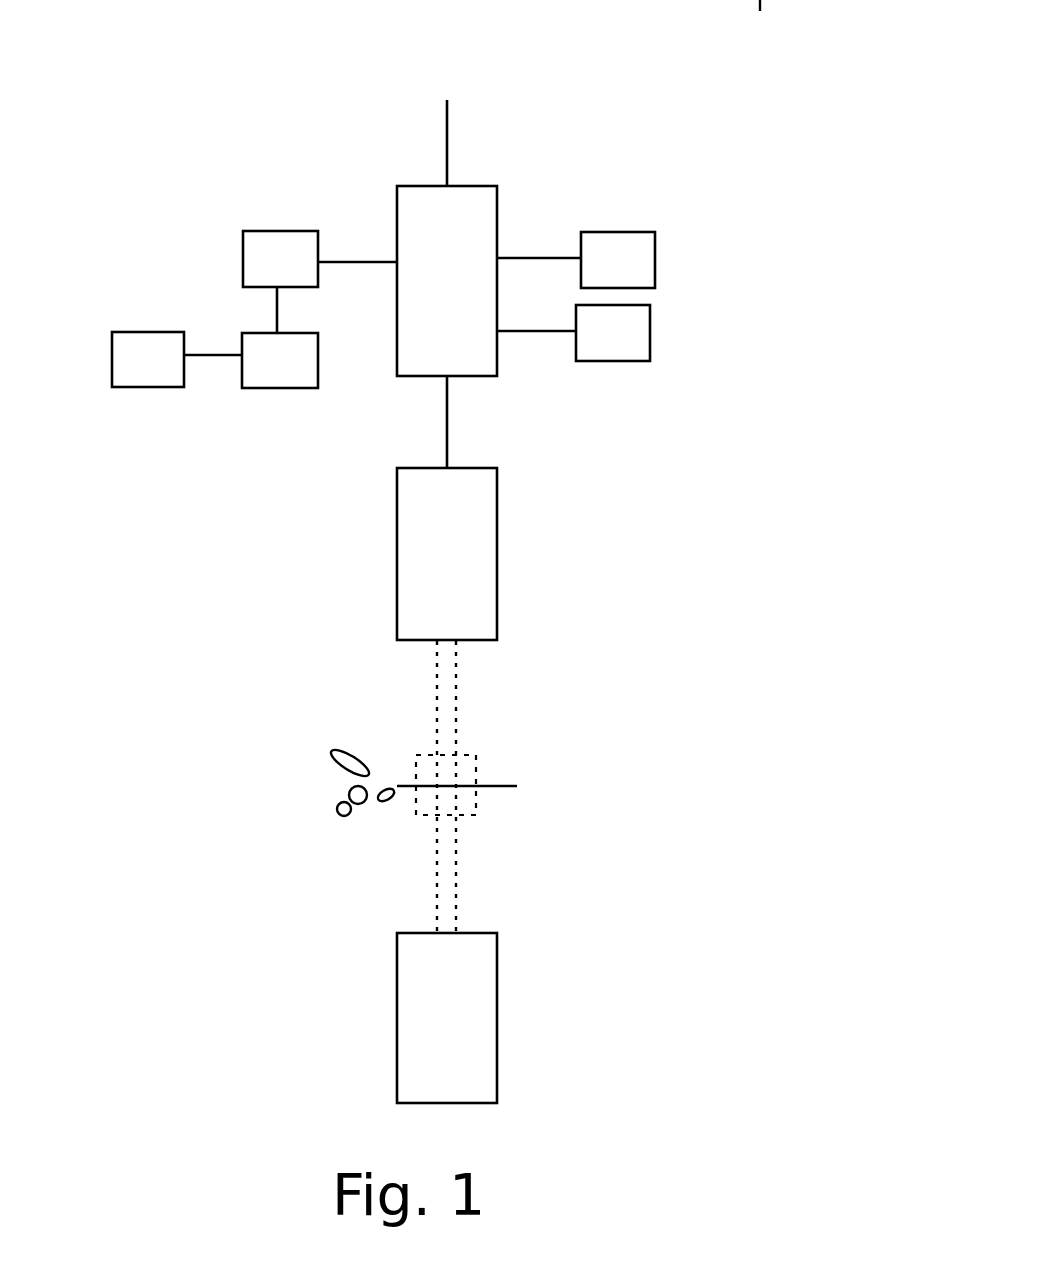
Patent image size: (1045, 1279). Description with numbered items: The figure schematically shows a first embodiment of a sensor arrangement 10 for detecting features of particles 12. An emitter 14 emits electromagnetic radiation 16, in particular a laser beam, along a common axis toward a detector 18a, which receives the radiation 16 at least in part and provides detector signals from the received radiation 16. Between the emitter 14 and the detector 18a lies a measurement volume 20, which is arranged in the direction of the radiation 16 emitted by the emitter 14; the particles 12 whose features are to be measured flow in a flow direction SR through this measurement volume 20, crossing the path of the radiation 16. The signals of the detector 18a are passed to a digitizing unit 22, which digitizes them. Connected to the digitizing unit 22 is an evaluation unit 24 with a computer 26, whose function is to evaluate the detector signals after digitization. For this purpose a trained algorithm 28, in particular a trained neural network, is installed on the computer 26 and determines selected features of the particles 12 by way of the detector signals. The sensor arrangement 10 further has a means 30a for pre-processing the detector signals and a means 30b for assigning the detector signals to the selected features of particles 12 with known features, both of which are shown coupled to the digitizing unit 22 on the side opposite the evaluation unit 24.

The sensor arrangement 10 is at (623, 113).
The particles 12 is at (337, 728).
The emitter 14 is at (470, 1000).
The electromagnetic radiation 16 is at (453, 882).
The detector 18a is at (477, 568).
The measurement volume 20 is at (465, 802).
The digitizing unit 22 is at (475, 190).
The evaluation unit 24 is at (272, 250).
The computer 26 is at (282, 375).
The trained algorithm 28 is at (170, 377).
The means for pre-processing the detector signals 30a is at (623, 242).
The means for assigning the detector signals 30b is at (632, 348).
The flow direction SR is at (487, 782).